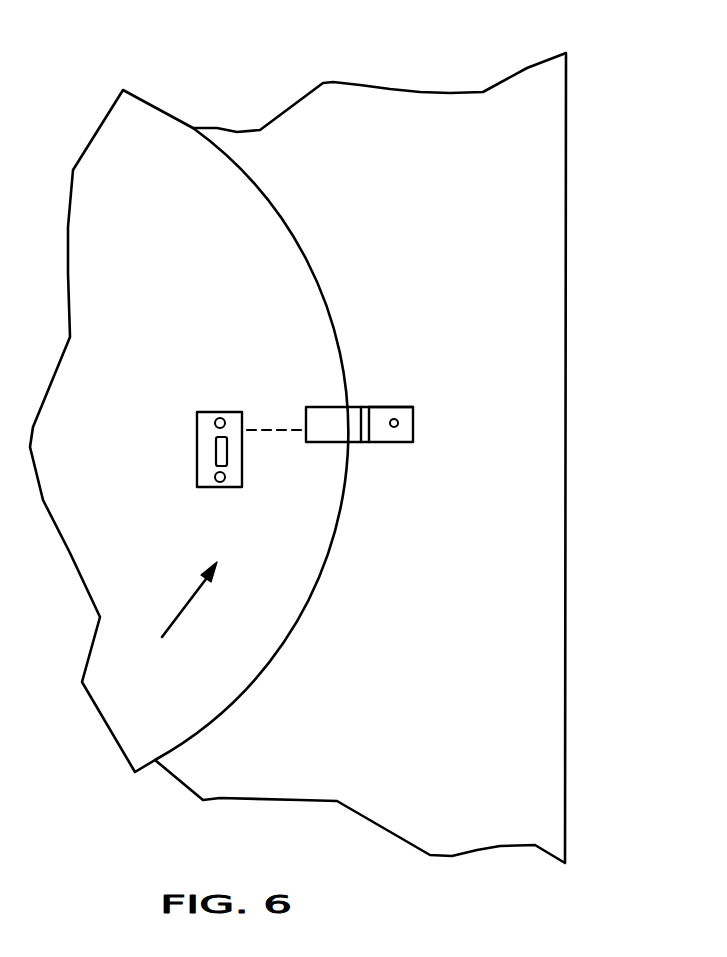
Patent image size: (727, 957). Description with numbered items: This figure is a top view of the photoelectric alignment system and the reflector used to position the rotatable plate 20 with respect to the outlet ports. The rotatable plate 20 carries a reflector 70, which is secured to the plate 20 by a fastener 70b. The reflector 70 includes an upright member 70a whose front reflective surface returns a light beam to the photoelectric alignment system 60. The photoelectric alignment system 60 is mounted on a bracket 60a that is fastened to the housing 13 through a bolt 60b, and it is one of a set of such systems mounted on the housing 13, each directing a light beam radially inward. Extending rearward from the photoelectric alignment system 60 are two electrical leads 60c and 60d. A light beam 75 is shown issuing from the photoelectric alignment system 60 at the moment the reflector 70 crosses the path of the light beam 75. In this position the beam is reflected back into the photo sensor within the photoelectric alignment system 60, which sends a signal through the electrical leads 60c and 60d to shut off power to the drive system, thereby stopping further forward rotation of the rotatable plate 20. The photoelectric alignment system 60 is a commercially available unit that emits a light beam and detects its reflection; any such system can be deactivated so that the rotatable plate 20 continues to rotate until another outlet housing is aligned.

The housing 13 is at (480, 207).
The rotatable plate 20 is at (137, 306).
The photoelectric alignment system 60 is at (353, 348).
The bracket 60a is at (408, 413).
The bolt 60b is at (394, 428).
The electrical lead 60c is at (363, 412).
The electrical lead 60d is at (368, 412).
The reflector 70 is at (208, 480).
The upright member 70a is at (217, 437).
The fastener 70b is at (223, 481).
The light beam 75 is at (274, 428).